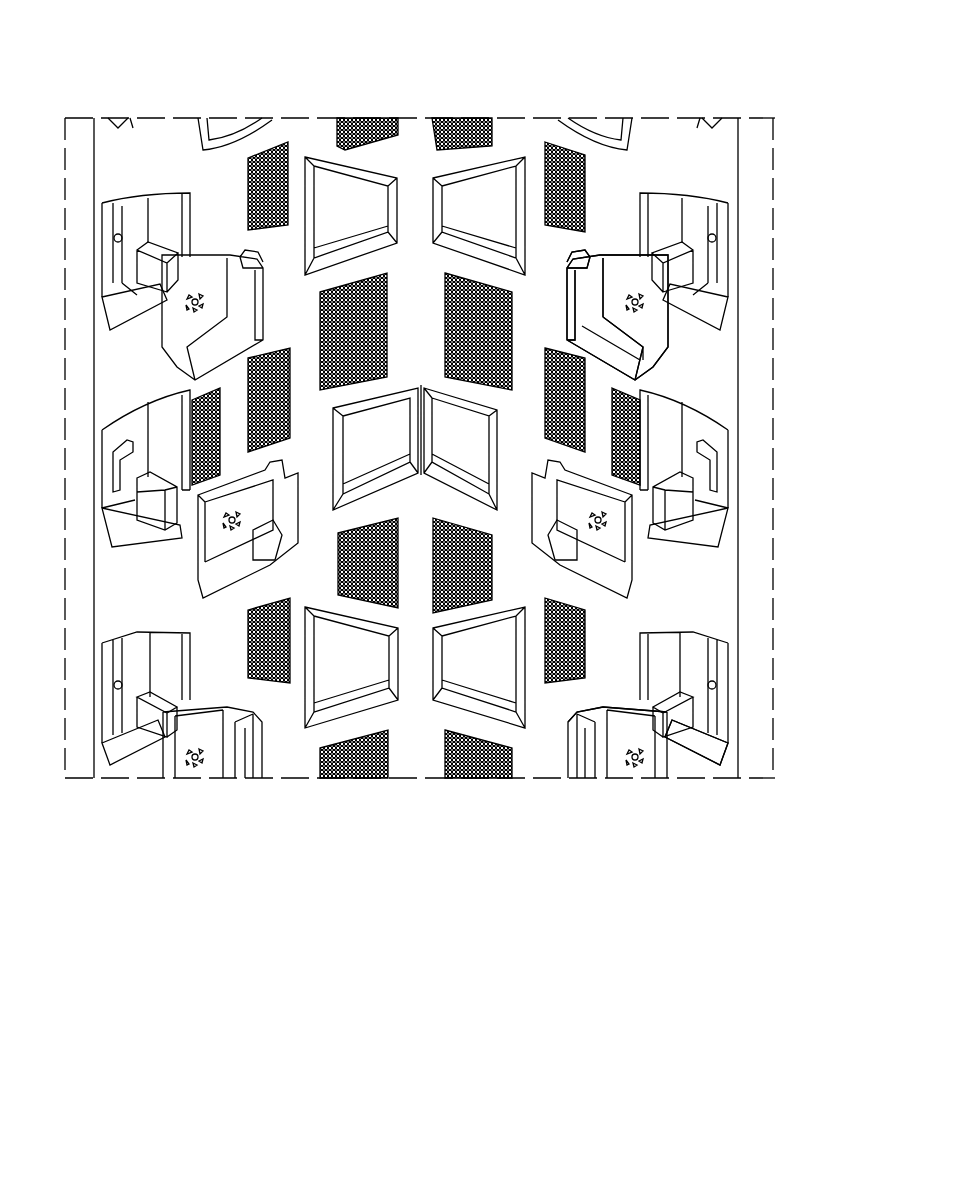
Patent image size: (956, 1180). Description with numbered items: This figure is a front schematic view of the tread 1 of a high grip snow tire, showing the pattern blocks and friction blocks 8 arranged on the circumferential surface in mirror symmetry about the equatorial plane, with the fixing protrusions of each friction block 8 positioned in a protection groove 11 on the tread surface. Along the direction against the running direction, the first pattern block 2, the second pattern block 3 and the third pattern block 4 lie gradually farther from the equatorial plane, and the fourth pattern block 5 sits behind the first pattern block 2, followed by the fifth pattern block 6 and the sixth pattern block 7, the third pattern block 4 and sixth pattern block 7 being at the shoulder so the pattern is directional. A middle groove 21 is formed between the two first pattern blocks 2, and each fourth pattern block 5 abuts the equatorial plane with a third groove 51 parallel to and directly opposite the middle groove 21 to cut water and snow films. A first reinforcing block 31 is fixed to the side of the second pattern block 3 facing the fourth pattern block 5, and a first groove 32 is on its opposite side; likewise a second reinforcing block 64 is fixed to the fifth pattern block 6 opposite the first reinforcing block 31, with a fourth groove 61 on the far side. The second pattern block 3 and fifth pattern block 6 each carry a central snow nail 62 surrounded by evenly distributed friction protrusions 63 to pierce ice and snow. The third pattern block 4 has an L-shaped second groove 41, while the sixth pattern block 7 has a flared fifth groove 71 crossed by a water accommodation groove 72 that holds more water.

The tread 1 is at (140, 148).
The protection groove 11 is at (225, 130).
The friction block 8 is at (337, 285).
The middle groove 21 is at (412, 200).
The first pattern block 2 is at (493, 200).
The second pattern block 3 is at (612, 273).
The first groove 32 is at (716, 241).
The snow nail 62 is at (652, 300).
The friction protrusions 63 is at (645, 313).
The first reinforcing block 31 is at (663, 348).
The third pattern block 4 is at (703, 427).
The second groove 41 is at (712, 476).
The fifth groove 71 is at (712, 660).
The water accommodation groove 72 is at (716, 686).
The sixth pattern block 7 is at (700, 740).
The second reinforcing block 64 is at (640, 700).
The fifth pattern block 6 is at (596, 540).
The fourth groove 61 is at (573, 540).
The third groove 51 is at (417, 480).
The fourth pattern block 5 is at (453, 448).